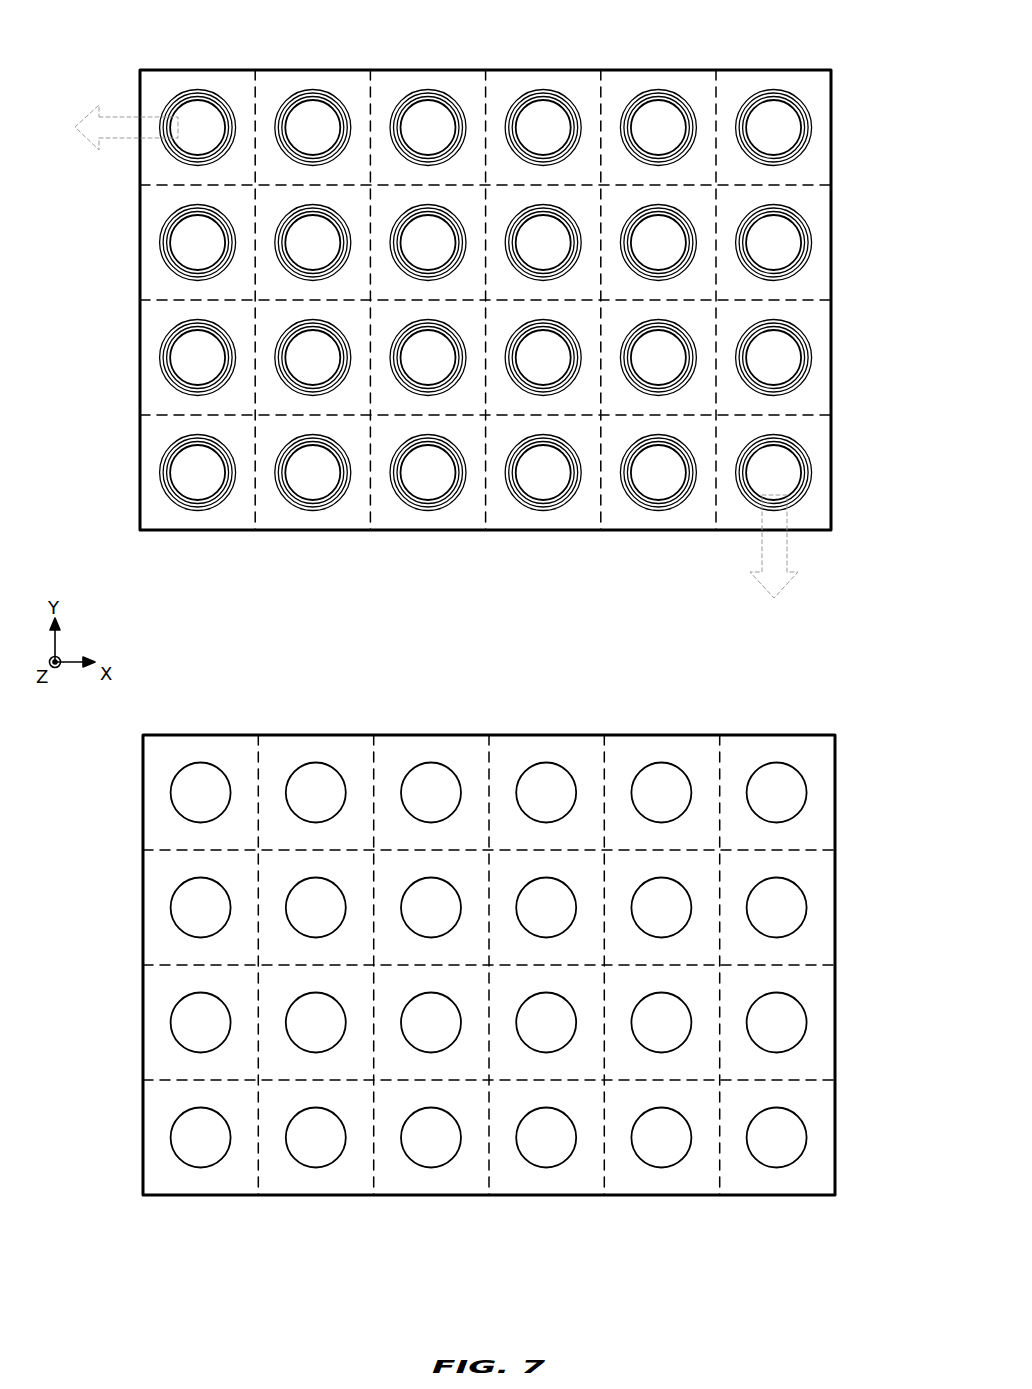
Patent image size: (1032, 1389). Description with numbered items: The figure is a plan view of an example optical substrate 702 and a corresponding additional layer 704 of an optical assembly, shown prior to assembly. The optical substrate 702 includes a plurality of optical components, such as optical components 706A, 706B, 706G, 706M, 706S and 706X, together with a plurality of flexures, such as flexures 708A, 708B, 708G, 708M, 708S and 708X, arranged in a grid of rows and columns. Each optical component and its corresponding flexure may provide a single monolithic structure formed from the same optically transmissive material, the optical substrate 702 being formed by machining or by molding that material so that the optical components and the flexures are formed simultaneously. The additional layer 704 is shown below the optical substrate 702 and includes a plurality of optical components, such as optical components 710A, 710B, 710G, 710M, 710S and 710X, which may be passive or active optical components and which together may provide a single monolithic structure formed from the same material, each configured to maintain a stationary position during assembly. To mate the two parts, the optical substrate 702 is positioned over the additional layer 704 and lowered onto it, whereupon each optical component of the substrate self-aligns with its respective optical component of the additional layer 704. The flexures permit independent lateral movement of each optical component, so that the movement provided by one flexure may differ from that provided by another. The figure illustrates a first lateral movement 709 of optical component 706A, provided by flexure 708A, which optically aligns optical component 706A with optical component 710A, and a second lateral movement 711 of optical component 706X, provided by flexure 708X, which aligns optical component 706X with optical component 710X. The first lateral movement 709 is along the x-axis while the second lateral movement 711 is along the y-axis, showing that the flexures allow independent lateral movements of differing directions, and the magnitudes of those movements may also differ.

The optical substrate 702 is at (820, 70).
The additional layer 704 is at (812, 735).
The optical component 706A is at (185, 122).
The optical component 706B is at (298, 122).
The optical component 706G is at (192, 252).
The optical component 706M is at (190, 373).
The optical component 706S is at (190, 493).
The optical component 706X is at (785, 473).
The flexure 708A is at (213, 93).
The flexure 708B is at (325, 93).
The flexure 708G is at (168, 225).
The flexure 708M is at (167, 343).
The flexure 708S is at (167, 465).
The flexure 708X is at (793, 502).
The first lateral movement 709 is at (118, 118).
The optical component 710A is at (205, 780).
The optical component 710B is at (315, 775).
The optical component 710G is at (198, 912).
The optical component 710M is at (197, 1030).
The optical component 710S is at (188, 1145).
The optical component 710X is at (803, 1142).
The second lateral movement 711 is at (763, 558).